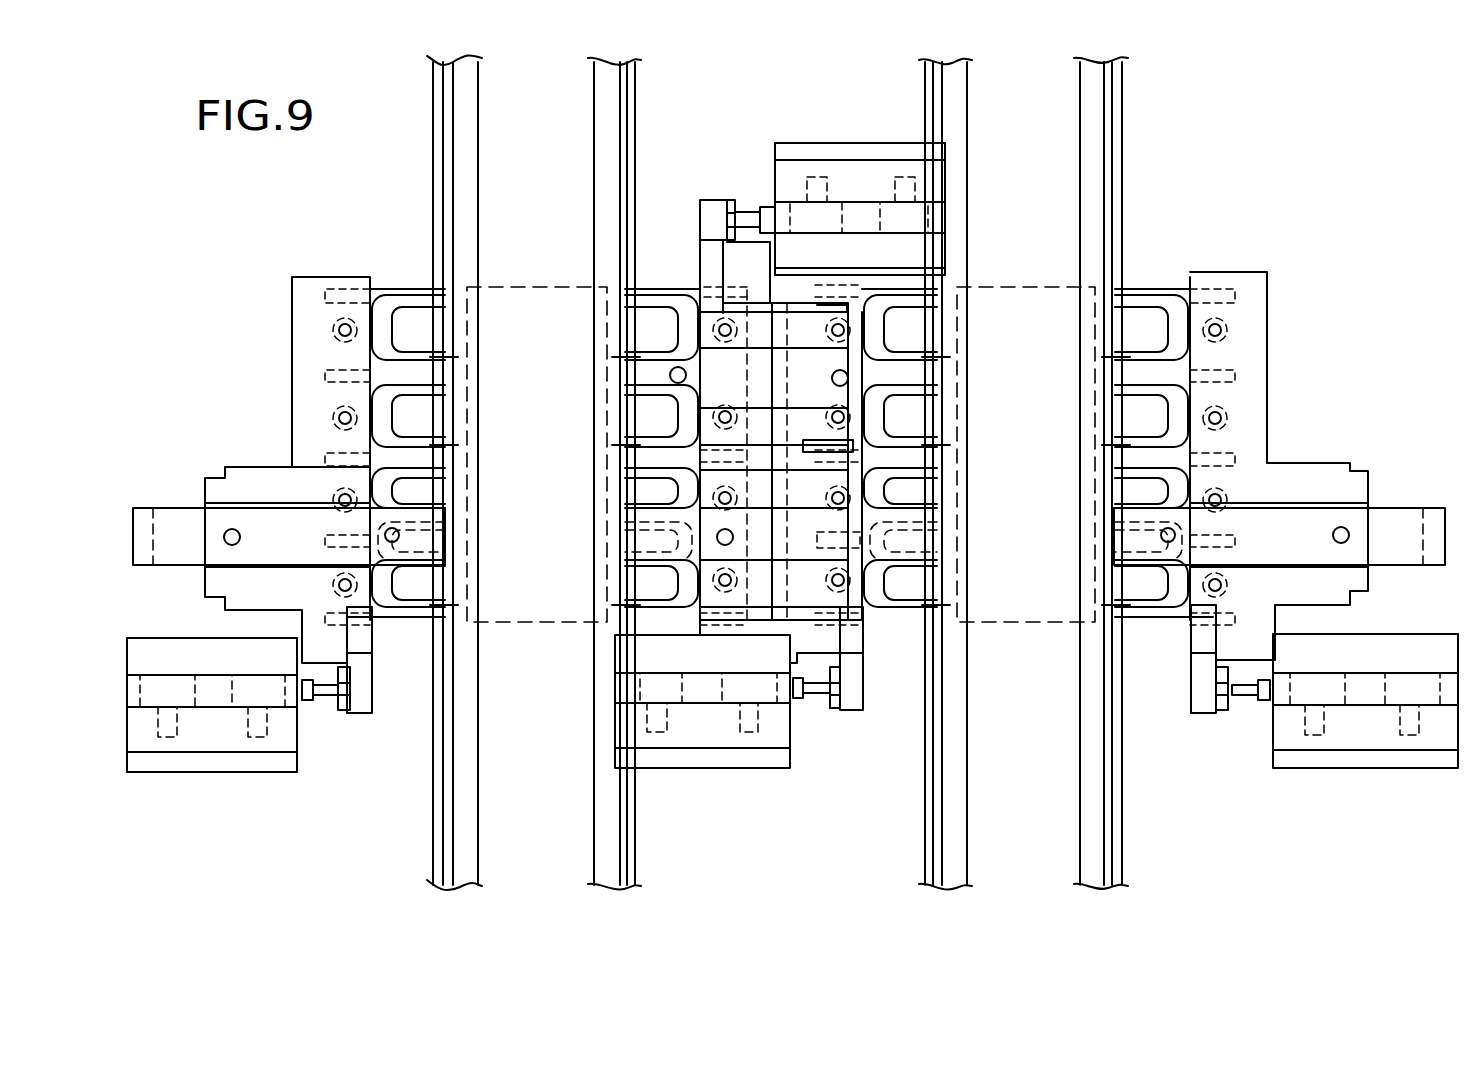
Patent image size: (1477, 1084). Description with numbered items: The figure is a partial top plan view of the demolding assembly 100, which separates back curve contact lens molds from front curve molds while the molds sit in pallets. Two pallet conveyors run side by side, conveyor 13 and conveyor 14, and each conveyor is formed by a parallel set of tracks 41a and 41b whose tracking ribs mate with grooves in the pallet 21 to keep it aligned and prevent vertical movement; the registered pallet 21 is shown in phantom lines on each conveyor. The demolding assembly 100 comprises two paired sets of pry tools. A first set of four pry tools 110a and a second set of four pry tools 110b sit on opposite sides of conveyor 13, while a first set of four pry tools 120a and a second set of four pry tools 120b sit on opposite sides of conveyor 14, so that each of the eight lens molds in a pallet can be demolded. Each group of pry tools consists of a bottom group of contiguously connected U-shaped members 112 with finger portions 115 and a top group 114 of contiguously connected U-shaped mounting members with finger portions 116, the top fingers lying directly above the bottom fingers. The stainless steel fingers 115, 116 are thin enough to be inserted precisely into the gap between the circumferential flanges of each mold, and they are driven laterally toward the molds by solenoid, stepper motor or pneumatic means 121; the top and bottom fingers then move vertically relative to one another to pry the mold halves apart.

The demolding assembly 100 is at (749, 130).
The first set of pry tools 110a is at (378, 268).
The second set of pry tools 110b is at (658, 272).
The U-shaped members 112 is at (370, 405).
The top group of U-shaped mounting members 114 is at (375, 375).
The finger portions 115 is at (430, 440).
The finger portions 116 is at (412, 293).
The first set of pry tools 120a is at (902, 623).
The second set of pry tools 120b is at (1151, 622).
The pneumatic means 121 is at (305, 285).
The pallet 21 is at (529, 287).
The conveyor 13 is at (542, 141).
The conveyor 14 is at (1036, 136).
The track 41a is at (472, 720).
The track 41b is at (603, 782).